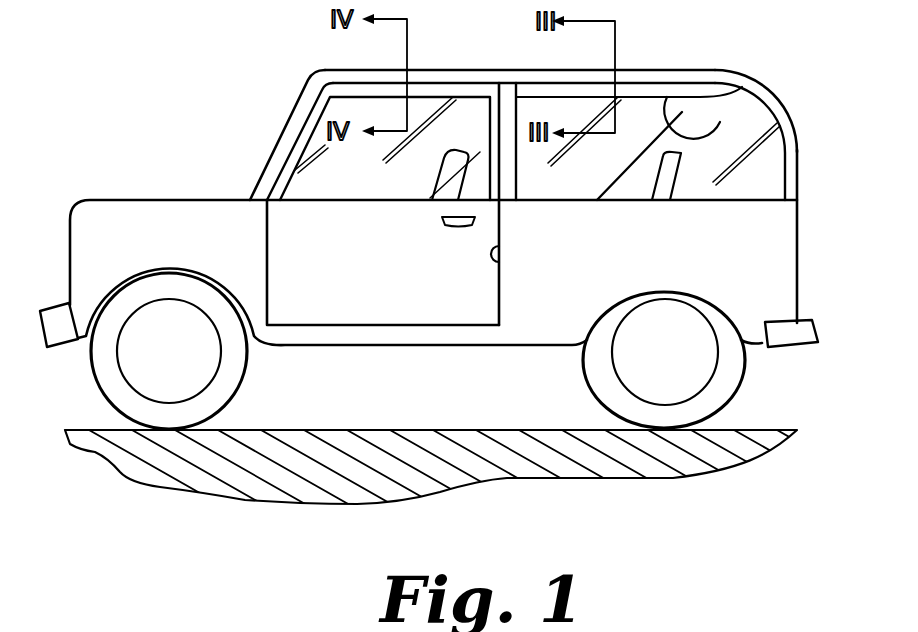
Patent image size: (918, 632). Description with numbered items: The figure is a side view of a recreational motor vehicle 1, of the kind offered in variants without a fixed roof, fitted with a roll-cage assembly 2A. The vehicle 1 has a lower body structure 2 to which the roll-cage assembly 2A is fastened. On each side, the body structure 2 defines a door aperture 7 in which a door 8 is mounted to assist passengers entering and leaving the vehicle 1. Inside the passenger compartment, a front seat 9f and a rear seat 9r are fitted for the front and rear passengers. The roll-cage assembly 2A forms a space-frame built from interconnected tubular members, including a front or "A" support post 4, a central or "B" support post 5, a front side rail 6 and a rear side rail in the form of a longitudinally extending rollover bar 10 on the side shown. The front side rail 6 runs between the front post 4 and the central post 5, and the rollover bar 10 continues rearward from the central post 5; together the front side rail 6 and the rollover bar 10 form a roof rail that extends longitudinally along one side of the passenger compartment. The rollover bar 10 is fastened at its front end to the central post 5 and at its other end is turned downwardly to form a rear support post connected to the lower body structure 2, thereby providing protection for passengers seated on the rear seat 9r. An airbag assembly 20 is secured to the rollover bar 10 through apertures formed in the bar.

The motor vehicle 1 is at (220, 185).
The lower body structure 2 is at (806, 225).
The roll-cage assembly 2A is at (663, 70).
The front support post 4 is at (290, 118).
The central support post 5 is at (520, 112).
The front side rail 6 is at (432, 70).
The door aperture 7 is at (506, 246).
The door 8 is at (400, 269).
The front seat 9f is at (444, 153).
The rear seat 9r is at (672, 178).
The rollover bar 10 is at (768, 90).
The airbag assembly 20 is at (692, 106).